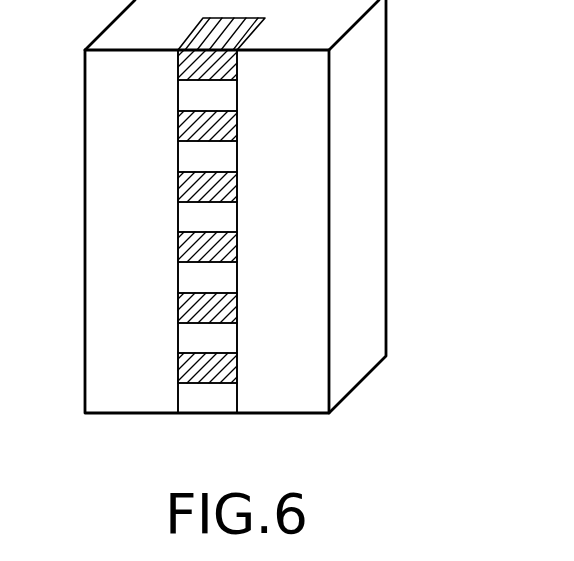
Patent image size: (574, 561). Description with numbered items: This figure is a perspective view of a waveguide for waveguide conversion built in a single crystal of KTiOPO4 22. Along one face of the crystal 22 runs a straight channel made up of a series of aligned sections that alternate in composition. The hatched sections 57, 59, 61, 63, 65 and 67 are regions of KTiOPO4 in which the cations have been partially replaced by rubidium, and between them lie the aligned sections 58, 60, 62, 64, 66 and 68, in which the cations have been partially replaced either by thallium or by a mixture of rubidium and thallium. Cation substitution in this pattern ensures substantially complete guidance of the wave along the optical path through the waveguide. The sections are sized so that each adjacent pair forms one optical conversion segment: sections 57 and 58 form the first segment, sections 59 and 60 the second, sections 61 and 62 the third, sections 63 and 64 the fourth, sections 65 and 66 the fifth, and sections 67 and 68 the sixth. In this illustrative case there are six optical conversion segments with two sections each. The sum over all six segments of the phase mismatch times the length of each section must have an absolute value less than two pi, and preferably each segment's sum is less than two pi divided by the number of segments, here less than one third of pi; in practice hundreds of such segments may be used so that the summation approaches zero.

The single crystal of KTiOPO4 22 is at (365, 100).
The aligned section 57 is at (175, 67).
The aligned section 58 is at (238, 93).
The aligned section 59 is at (175, 128).
The aligned section 60 is at (238, 155).
The aligned section 61 is at (175, 190).
The aligned section 62 is at (238, 216).
The aligned section 63 is at (175, 248).
The aligned section 64 is at (238, 276).
The aligned section 65 is at (175, 308).
The aligned section 66 is at (238, 337).
The aligned section 67 is at (175, 370).
The aligned section 68 is at (238, 397).